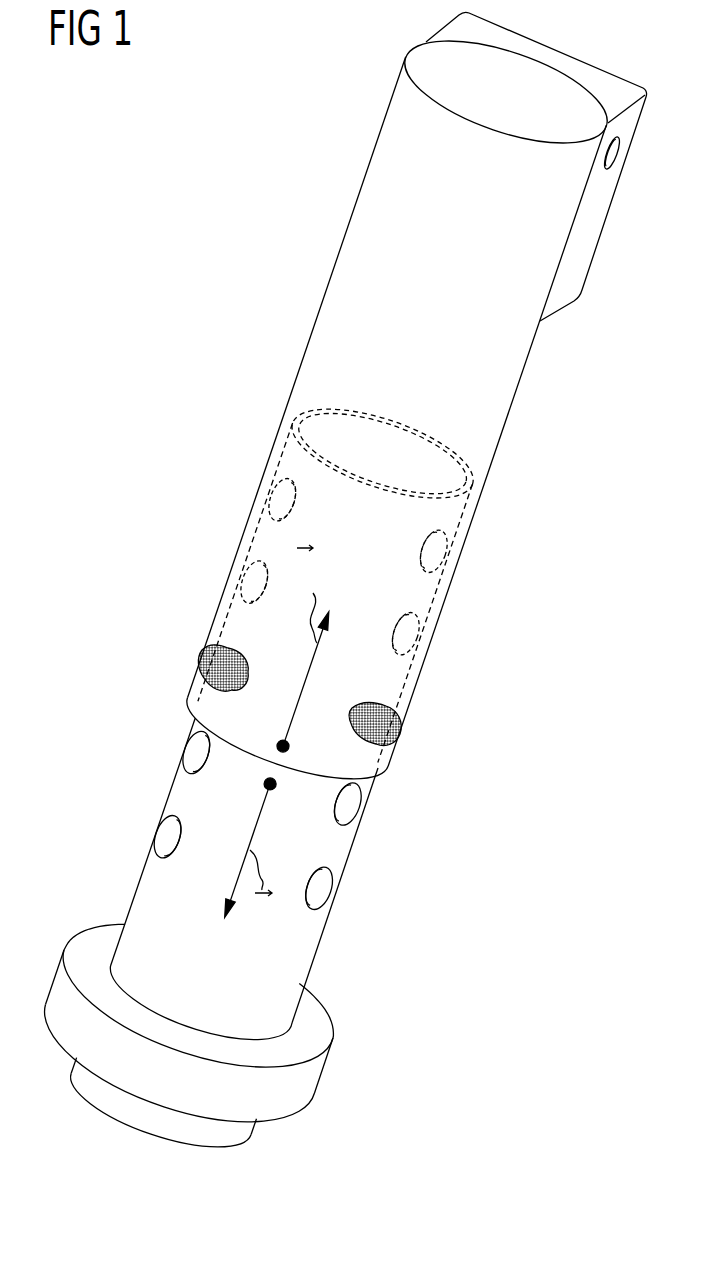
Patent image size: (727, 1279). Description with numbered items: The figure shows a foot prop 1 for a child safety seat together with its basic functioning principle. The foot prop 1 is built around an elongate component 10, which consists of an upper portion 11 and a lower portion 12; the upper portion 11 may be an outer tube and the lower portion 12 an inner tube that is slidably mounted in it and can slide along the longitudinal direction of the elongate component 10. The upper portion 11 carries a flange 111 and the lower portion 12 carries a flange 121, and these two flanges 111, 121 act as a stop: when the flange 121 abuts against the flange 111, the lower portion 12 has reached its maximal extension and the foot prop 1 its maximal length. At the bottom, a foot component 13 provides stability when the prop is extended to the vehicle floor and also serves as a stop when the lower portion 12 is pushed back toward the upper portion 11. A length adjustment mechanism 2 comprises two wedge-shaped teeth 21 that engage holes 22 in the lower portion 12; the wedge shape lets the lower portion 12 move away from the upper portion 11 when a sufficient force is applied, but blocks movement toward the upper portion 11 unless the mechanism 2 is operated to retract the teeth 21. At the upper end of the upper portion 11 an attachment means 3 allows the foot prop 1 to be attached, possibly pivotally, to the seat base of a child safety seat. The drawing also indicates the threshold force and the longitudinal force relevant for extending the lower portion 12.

The foot prop 1 is at (238, 253).
The length adjustment mechanism 2 is at (363, 577).
The attachment means 3 is at (583, 258).
The elongate component 10 is at (283, 453).
The upper portion 11 is at (495, 398).
The lower portion 12 is at (152, 875).
The foot component 13 is at (308, 1078).
The teeth 21 is at (238, 678).
The holes 22 is at (280, 493).
The flange 111 is at (383, 767).
The flange 121 is at (470, 478).